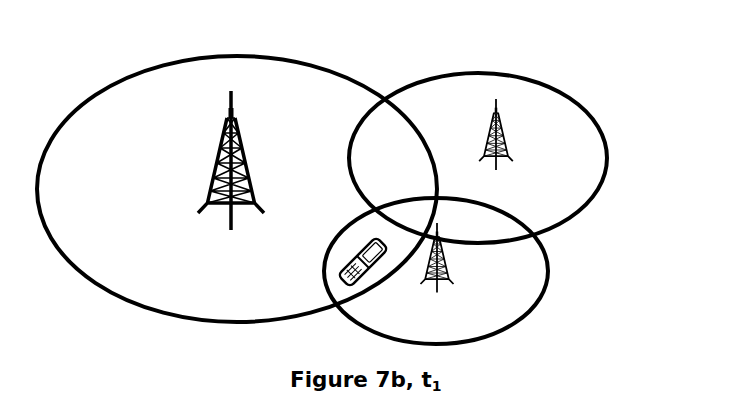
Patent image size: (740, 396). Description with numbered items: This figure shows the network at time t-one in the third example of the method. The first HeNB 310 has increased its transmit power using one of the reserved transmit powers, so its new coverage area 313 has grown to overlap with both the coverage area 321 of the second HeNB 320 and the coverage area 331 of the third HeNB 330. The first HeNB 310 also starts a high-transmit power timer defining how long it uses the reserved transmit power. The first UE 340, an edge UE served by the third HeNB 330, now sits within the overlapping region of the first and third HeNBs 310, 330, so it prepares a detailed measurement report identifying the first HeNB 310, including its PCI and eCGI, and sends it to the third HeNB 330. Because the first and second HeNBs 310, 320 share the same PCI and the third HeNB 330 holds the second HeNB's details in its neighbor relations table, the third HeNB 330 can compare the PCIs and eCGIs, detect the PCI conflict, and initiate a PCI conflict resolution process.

The first HeNB 310 is at (228, 112).
The new coverage area 313 is at (305, 58).
The second HeNB 320 is at (503, 123).
The coverage area of the second HeNB 321 is at (604, 137).
The third HeNB 330 is at (453, 273).
The coverage area of the third HeNB 331 is at (542, 299).
The first UE 340 is at (345, 273).